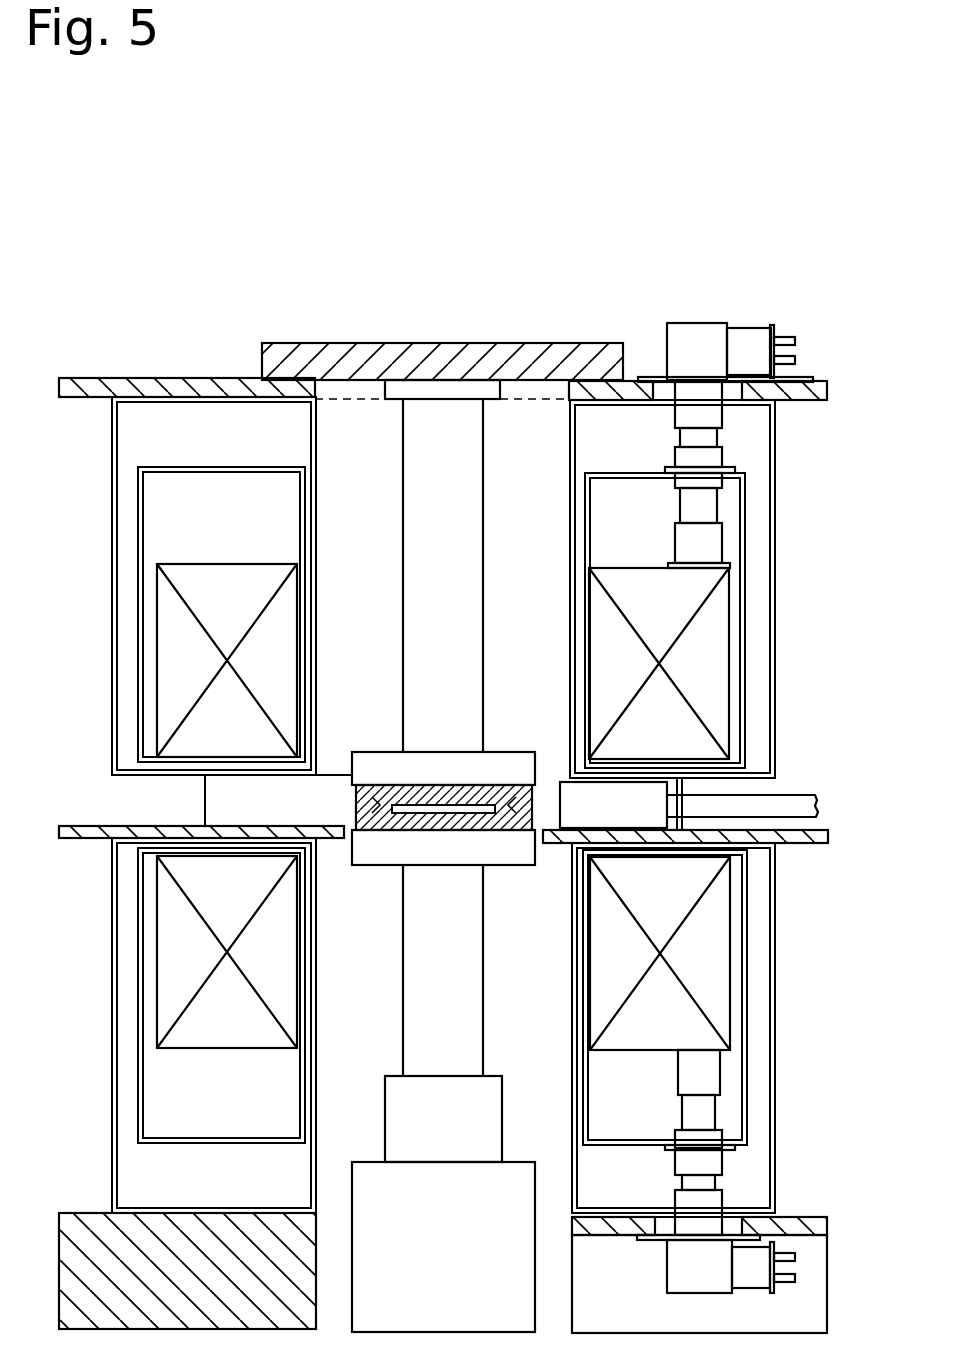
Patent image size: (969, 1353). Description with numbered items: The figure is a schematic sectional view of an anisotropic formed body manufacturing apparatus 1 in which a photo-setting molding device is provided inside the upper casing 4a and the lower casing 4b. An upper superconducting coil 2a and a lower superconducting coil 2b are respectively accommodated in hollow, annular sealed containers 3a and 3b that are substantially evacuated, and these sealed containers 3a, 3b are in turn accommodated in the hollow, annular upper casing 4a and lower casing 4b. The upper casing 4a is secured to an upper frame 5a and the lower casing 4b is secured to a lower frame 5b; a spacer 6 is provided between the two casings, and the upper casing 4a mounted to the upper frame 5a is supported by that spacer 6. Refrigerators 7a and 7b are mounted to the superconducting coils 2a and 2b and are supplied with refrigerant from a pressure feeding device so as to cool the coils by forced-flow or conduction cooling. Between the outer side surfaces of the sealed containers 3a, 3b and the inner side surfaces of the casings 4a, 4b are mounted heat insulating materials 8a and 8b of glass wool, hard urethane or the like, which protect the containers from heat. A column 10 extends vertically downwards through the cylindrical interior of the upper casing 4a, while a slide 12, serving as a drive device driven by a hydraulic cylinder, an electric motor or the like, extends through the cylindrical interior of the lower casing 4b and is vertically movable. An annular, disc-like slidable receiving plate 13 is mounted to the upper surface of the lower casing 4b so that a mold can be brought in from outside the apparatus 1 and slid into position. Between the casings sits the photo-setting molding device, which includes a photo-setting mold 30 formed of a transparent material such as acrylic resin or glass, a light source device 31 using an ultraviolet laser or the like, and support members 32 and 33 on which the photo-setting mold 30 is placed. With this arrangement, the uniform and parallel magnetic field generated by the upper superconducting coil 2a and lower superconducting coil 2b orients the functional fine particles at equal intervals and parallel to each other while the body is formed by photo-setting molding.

The anisotropic formed body manufacturing apparatus 1 is at (624, 324).
The upper superconducting coil 2a is at (730, 698).
The lower superconducting coil 2b is at (730, 935).
The sealed container 3a is at (745, 648).
The sealed container 3b is at (747, 988).
The upper casing 4a is at (771, 600).
The lower casing 4b is at (775, 1040).
The upper frame 5a is at (232, 378).
The lower frame 5b is at (88, 1213).
The spacer 6 is at (332, 775).
The refrigerator 7a is at (717, 513).
The refrigerator 7b is at (716, 1115).
The heat insulating material 8a is at (580, 437).
The heat insulating material 8b is at (580, 1183).
The column 10 is at (483, 578).
The slide 12 is at (483, 990).
The slidable receiving plate 13 is at (66, 838).
The photo-setting mold 30 is at (352, 806).
The light source device 31 is at (566, 781).
The support member 32 is at (380, 752).
The support member 33 is at (376, 865).